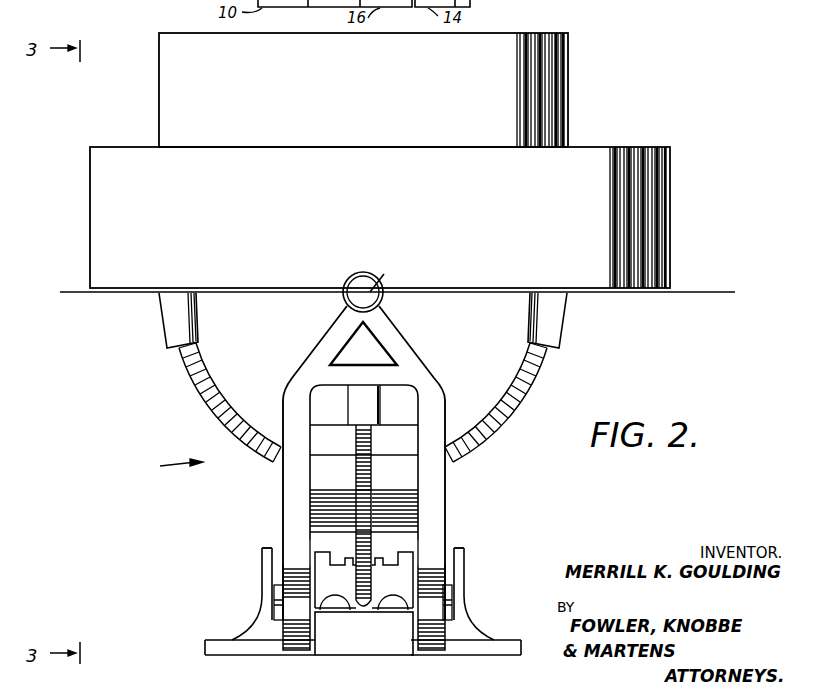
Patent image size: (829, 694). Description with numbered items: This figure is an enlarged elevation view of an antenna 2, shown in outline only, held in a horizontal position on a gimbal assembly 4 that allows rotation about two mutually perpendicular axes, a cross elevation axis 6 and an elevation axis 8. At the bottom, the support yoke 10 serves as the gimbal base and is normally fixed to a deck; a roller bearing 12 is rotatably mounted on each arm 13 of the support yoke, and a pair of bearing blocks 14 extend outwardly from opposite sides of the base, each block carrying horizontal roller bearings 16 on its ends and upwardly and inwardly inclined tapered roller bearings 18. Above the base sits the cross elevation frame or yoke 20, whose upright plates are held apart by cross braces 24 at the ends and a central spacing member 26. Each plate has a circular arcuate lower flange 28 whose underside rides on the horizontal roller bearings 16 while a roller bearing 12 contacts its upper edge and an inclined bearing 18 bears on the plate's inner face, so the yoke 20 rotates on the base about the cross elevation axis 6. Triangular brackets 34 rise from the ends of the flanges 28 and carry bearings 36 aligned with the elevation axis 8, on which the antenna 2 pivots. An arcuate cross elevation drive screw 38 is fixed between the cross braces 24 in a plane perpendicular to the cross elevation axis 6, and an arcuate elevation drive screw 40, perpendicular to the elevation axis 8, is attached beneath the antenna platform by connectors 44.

The antenna 2 is at (563, 72).
The gimbal assembly 4 is at (174, 466).
The cross elevation axis 6 is at (711, 293).
The elevation axis 8 is at (387, 276).
The support yoke 10 is at (502, 630).
The roller bearing 12 is at (278, 594).
The arm 13 is at (262, 552).
The bearing block 14 is at (352, 650).
The horizontal roller bearing 16 is at (293, 650).
The tapered roller bearing 18 is at (336, 606).
The cross elevation frame 20 is at (450, 513).
The cross brace 24 is at (372, 370).
The central spacing member 26 is at (432, 484).
The lower flange 28 is at (283, 485).
The triangular bracket 34 is at (400, 332).
The bearing 36 is at (365, 280).
The cross elevation drive screw 38 is at (356, 470).
The elevation drive screw 40 is at (541, 380).
The connector 44 is at (162, 323).